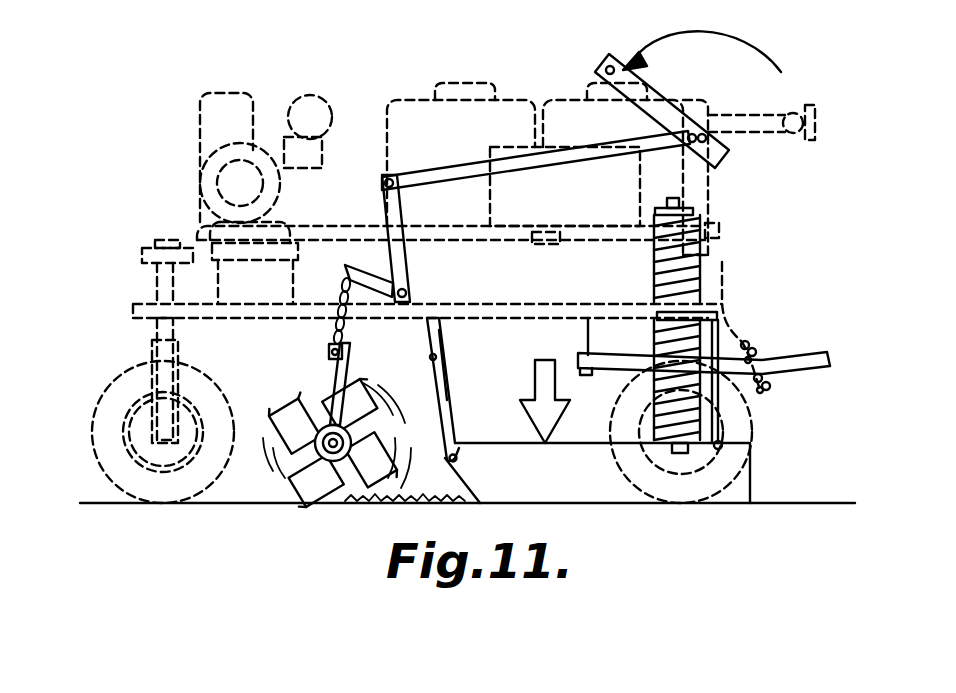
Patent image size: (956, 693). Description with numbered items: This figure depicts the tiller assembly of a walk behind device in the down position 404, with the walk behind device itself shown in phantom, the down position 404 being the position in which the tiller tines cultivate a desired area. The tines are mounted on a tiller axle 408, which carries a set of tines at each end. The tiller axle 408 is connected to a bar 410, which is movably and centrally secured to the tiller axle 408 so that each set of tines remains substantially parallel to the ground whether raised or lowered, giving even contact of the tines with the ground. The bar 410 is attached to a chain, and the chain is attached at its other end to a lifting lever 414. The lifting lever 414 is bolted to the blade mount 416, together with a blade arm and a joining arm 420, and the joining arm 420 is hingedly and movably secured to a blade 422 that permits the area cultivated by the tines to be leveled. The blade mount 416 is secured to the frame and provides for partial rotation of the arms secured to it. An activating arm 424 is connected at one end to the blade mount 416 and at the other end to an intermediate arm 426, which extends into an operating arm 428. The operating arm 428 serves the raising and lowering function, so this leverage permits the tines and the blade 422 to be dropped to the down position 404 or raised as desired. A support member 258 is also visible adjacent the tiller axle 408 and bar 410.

The roller support arm 258 is at (368, 396).
The down position 404 is at (307, 472).
The tiller axle 408 is at (283, 455).
The bar 410 is at (340, 460).
The lifting lever 414 is at (375, 278).
The blade mount 416 is at (440, 402).
The joining arm 420 is at (436, 330).
The blade 422 is at (568, 483).
The activating arm 424 is at (550, 155).
The intermediate arm 426 is at (397, 238).
The operating arm 428 is at (660, 110).